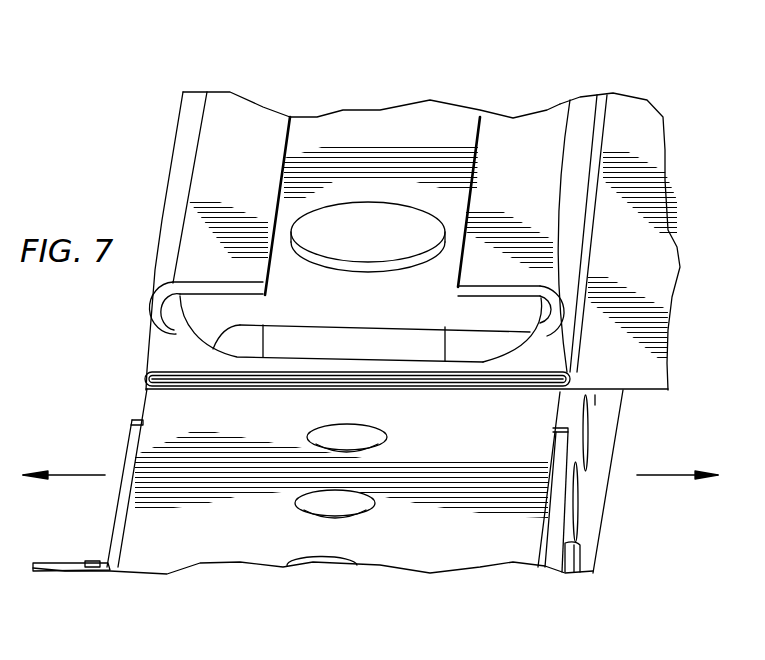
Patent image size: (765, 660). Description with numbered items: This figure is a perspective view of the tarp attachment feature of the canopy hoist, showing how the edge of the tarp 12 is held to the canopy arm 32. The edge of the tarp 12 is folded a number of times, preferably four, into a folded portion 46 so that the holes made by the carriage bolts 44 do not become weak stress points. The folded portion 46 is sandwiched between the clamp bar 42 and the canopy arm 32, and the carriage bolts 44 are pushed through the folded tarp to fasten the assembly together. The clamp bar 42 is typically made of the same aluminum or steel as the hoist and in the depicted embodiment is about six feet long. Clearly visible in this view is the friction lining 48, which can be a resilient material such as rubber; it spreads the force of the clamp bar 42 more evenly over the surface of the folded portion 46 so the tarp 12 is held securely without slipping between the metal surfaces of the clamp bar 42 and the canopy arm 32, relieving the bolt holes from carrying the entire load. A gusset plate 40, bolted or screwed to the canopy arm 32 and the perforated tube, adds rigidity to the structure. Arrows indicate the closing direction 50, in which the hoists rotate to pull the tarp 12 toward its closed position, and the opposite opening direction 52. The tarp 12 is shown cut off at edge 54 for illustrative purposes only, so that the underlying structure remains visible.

The tarp 12 is at (663, 273).
The canopy arm 32 is at (443, 574).
The gusset plate 40 is at (113, 533).
The clamp bar 42 is at (450, 117).
The carriage bolts 44 is at (377, 222).
The folded portion 46 is at (145, 378).
The friction lining 48 is at (194, 97).
The closing direction 50 is at (90, 474).
The opening direction 52 is at (650, 475).
The edge 54 is at (635, 392).